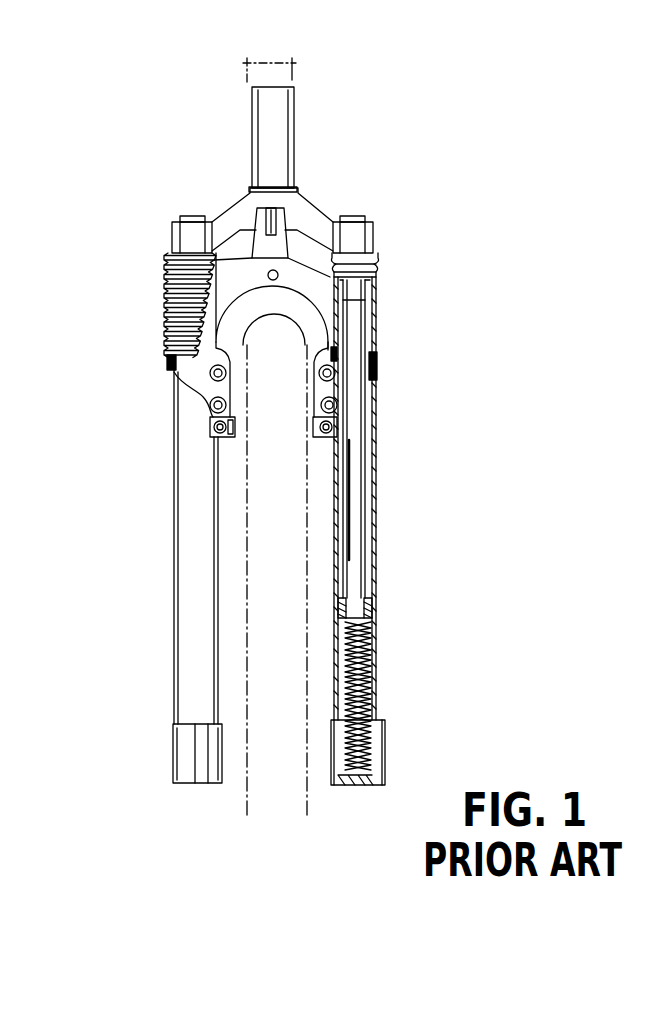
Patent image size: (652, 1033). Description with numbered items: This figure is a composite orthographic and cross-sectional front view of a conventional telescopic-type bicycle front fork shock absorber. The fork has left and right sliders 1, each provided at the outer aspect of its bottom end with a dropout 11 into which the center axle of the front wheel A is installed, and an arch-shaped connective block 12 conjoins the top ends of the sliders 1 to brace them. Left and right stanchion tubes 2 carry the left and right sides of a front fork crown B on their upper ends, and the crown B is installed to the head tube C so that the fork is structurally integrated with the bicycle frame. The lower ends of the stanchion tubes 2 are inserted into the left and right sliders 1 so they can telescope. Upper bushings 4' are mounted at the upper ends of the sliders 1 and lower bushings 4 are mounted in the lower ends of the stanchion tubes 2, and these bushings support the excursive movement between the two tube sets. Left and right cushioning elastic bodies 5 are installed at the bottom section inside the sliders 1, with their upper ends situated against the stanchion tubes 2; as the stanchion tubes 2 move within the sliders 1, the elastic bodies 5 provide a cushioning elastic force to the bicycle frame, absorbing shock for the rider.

The head tube C is at (282, 74).
The front fork crown B is at (302, 205).
The front wheel A is at (256, 472).
The arch-shaped connective block 12 is at (182, 276).
The slider 1 is at (188, 530).
The dropout 11 is at (206, 750).
The upper bushing 4' is at (386, 367).
The stanchion tube 2 is at (357, 518).
The lower bushing 4 is at (387, 607).
The cushioning elastic body 5 is at (362, 678).